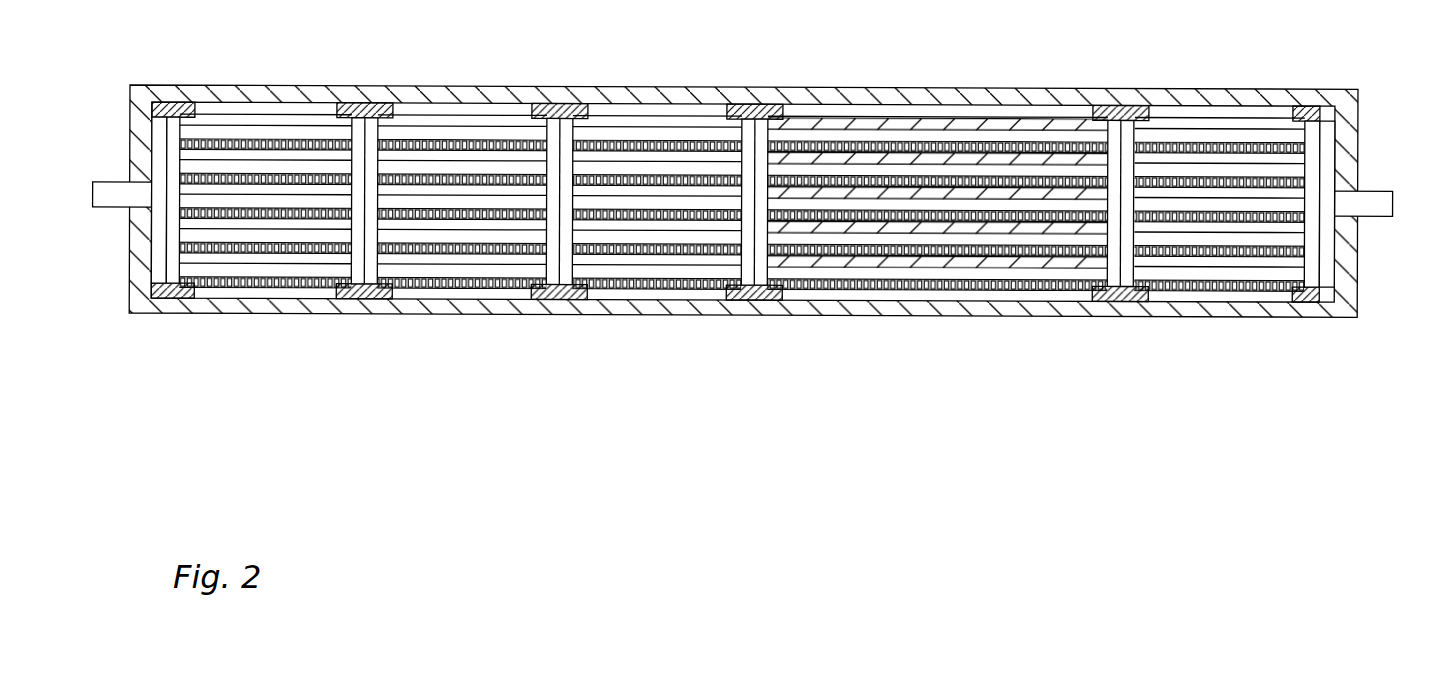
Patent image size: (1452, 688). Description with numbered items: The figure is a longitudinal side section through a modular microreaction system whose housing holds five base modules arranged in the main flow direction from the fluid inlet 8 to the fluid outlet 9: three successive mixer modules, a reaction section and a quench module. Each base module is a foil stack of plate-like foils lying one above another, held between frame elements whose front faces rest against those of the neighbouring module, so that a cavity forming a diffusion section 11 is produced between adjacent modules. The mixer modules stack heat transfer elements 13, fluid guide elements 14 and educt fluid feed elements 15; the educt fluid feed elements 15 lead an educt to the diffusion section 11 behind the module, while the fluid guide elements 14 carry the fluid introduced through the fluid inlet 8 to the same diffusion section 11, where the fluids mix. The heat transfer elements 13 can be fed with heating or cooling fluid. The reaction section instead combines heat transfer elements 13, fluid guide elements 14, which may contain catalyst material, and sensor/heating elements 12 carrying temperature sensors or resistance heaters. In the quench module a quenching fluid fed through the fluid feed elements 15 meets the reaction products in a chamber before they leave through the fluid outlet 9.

The fluid inlet 8 is at (107, 188).
The fluid outlet 9 is at (1378, 192).
The diffusion section 11 is at (755, 253).
The sensor/heating element 12 is at (808, 122).
The heat transfer element 13 is at (1178, 143).
The fluid guide element 14 is at (277, 133).
The educt fluid feed element 15 is at (203, 122).